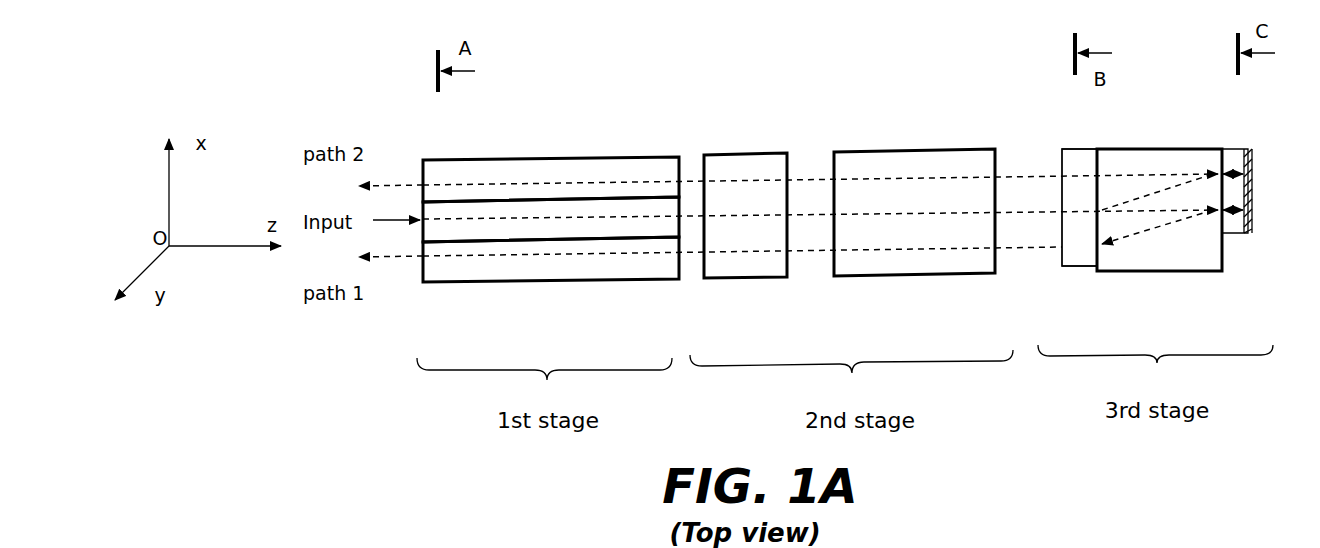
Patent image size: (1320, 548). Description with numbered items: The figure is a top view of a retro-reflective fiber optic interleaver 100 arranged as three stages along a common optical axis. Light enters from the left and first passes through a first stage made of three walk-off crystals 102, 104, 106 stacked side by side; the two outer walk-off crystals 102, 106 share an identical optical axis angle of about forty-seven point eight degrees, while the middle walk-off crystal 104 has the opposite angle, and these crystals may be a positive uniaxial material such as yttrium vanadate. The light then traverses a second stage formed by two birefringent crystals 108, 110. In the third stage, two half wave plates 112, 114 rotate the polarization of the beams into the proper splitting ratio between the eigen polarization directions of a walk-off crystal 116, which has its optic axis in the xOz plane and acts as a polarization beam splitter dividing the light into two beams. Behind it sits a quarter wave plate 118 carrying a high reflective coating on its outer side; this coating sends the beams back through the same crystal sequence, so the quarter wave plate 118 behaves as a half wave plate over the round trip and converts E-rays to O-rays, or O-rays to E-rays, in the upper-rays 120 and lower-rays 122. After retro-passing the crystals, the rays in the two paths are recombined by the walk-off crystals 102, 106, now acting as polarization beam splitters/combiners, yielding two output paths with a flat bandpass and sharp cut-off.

The retro-reflective fiber optic interleaver 100 is at (821, 64).
The walk-off crystal 102 is at (461, 271).
The walk-off crystal 104 is at (531, 232).
The walk-off crystal 106 is at (597, 173).
The birefringent crystal 108 is at (740, 267).
The birefringent crystal 110 is at (882, 167).
The half wave plate 112 is at (1073, 255).
The half wave plate 114 is at (1052, 305).
The walk-off crystal 116 is at (1140, 257).
The quarter wave plate 118 is at (1235, 228).
The upper-rays 120 is at (1190, 182).
The lower-rays 122 is at (1178, 220).